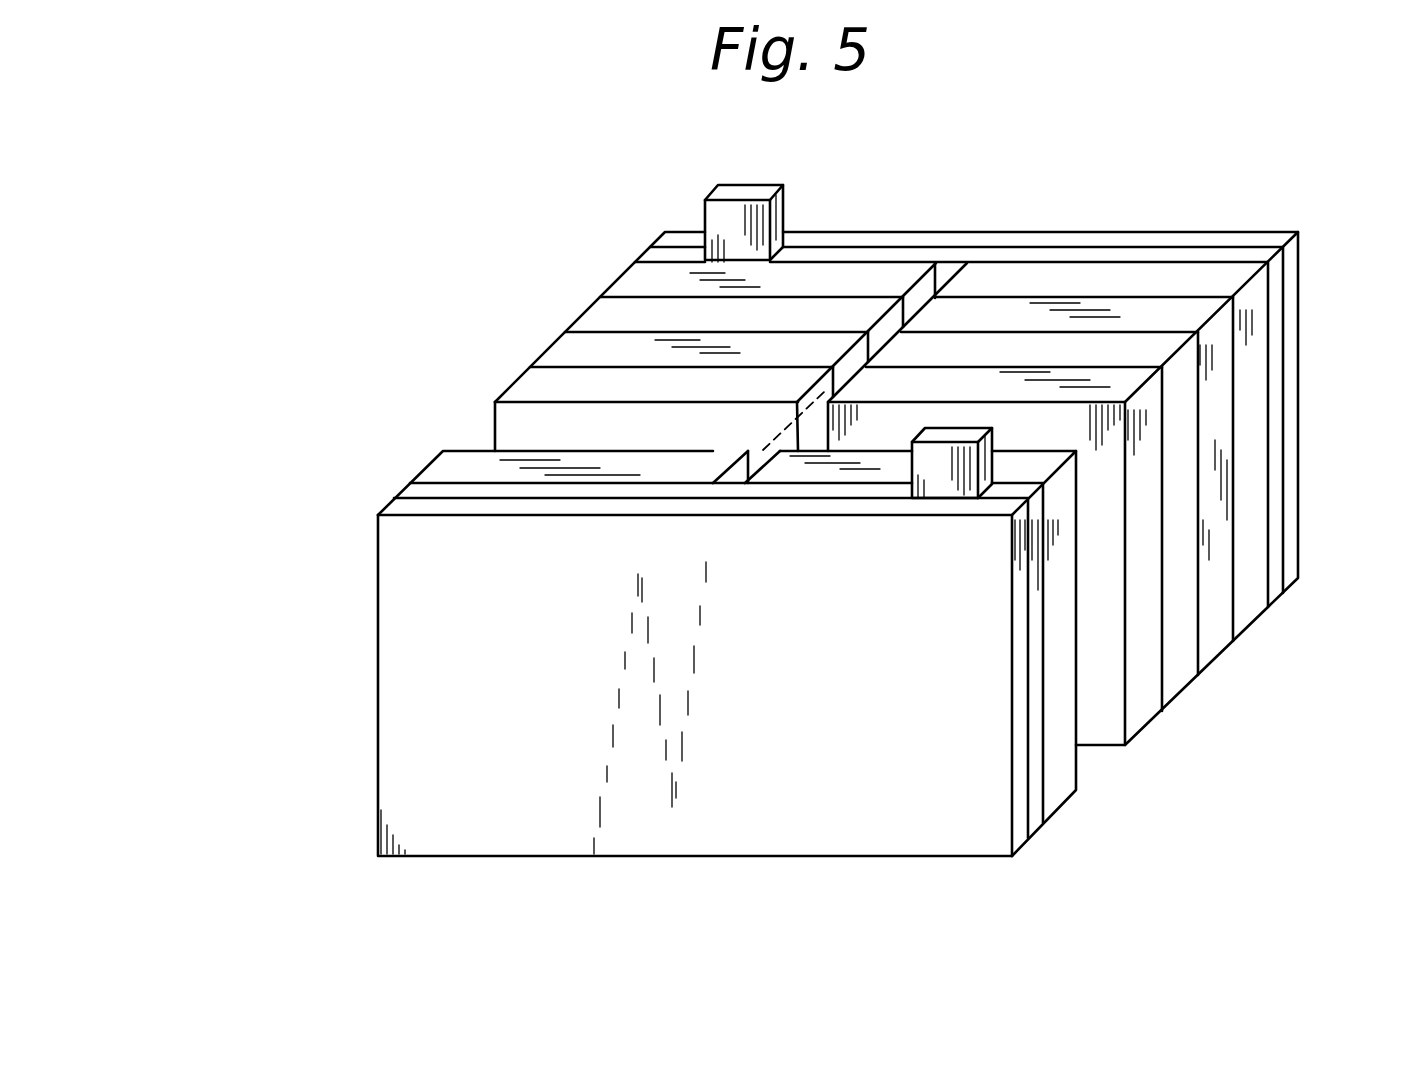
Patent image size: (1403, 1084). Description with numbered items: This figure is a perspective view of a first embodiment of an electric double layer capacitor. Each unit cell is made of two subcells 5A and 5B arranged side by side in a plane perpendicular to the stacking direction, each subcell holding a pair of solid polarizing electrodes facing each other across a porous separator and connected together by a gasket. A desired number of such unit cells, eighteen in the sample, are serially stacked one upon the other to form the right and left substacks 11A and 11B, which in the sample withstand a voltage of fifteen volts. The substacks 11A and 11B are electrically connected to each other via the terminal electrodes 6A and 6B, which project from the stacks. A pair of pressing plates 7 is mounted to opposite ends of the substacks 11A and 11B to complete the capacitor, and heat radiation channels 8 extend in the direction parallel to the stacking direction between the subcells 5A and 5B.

The subcell 5A is at (632, 282).
The subcell 5B is at (1063, 628).
The terminal electrode 6A is at (418, 492).
The terminal electrode 6B is at (837, 255).
The pressing plate 7 is at (1162, 238).
The heat radiation channel 8 is at (920, 290).
The substack 11A is at (552, 247).
The substack 11B is at (1190, 755).